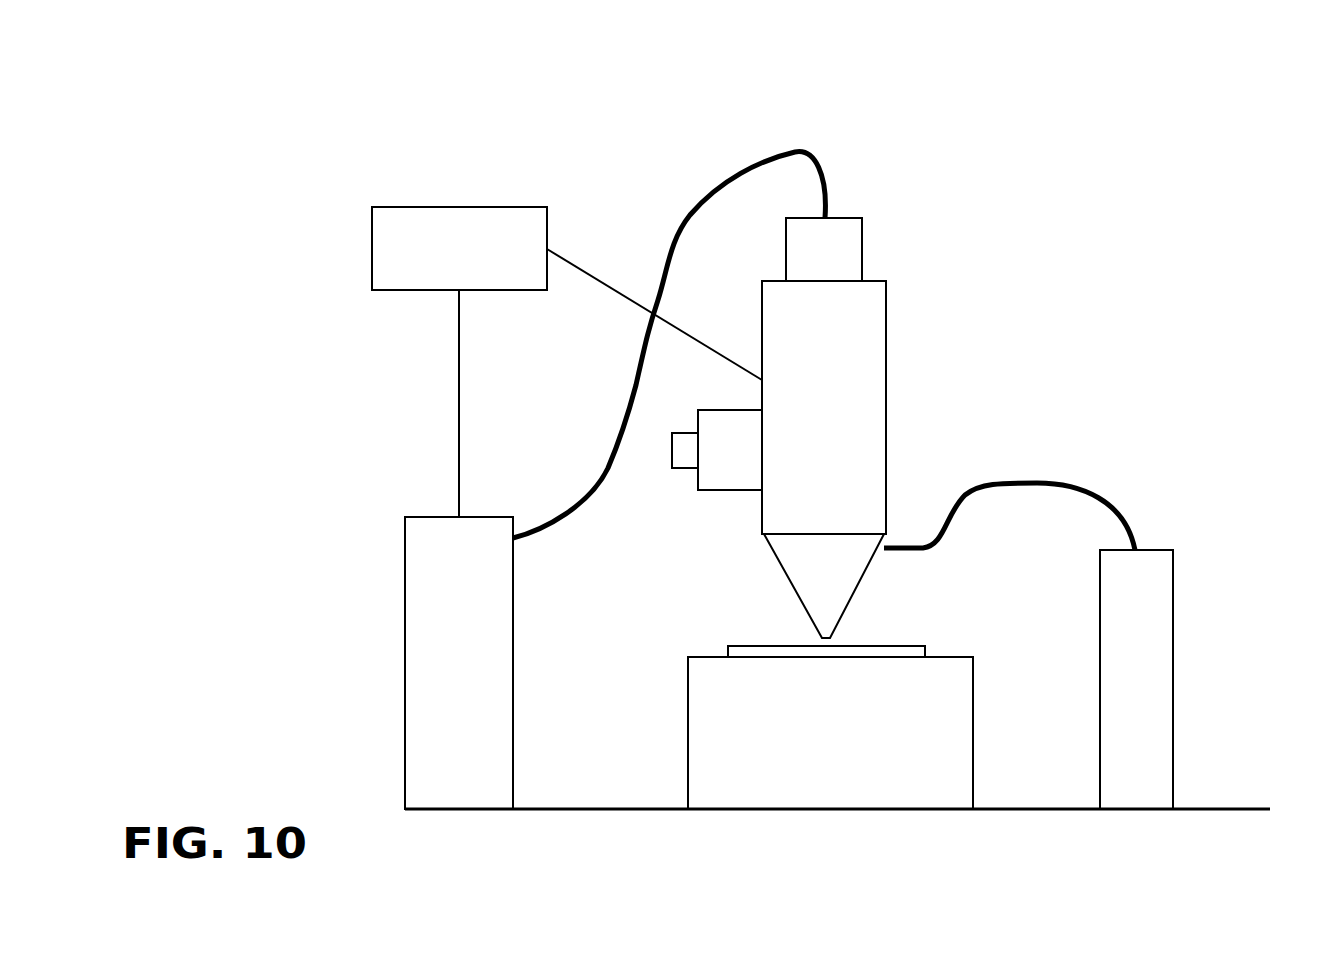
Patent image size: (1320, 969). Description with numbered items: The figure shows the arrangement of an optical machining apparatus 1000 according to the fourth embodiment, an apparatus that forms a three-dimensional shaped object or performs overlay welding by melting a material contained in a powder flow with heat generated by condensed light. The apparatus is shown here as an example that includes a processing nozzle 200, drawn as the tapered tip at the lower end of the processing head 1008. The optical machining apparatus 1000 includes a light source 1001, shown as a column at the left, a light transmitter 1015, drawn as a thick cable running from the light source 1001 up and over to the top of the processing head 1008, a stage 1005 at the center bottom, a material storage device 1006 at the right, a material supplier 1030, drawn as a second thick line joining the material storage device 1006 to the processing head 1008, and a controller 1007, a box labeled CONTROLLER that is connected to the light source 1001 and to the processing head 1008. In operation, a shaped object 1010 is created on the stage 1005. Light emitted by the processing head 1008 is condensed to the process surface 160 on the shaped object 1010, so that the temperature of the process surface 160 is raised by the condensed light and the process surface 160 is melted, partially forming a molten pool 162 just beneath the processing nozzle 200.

The optical machining apparatus 1000 is at (372, 158).
The controller 1007 is at (372, 248).
The light transmitter 1015 is at (668, 240).
The processing head 1008 is at (886, 313).
The processing nozzle 200 is at (798, 602).
The molten pool 162 is at (830, 640).
The light source 1001 is at (430, 515).
The process surface 160 is at (737, 643).
The shaped object 1010 is at (925, 652).
The stage 1005 is at (688, 732).
The material supplier 1030 is at (1043, 487).
The material storage device 1006 is at (1173, 672).